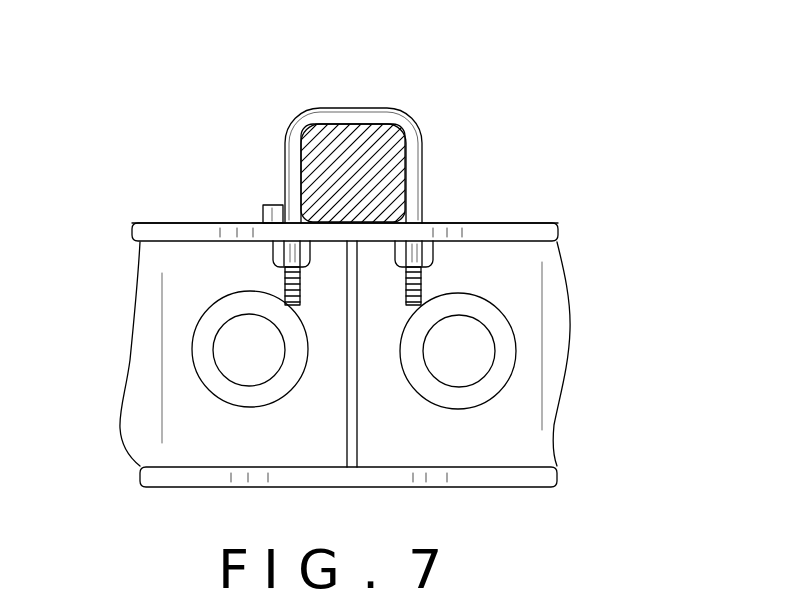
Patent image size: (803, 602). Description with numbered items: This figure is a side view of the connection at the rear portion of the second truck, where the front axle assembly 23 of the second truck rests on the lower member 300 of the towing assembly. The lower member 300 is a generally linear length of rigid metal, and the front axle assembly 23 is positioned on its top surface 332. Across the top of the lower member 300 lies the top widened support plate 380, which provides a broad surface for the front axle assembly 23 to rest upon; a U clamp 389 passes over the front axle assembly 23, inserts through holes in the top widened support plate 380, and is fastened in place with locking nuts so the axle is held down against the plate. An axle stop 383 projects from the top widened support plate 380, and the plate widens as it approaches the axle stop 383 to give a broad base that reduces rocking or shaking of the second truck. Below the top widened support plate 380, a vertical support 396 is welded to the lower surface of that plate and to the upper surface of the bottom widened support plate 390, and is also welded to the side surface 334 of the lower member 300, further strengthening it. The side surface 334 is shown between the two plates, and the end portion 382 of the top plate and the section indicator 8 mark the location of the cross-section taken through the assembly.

The front axle assembly 23 is at (342, 143).
The U clamp 389 is at (423, 138).
The top surface 332 is at (466, 221).
The top widened support plate 380 is at (523, 232).
The plate end portion 382 is at (190, 233).
The axle stop 383 is at (271, 212).
The side surface 334 is at (520, 273).
The lower member 300 is at (517, 394).
The bottom widened support plate 390 is at (545, 477).
The vertical supports 396 is at (357, 415).
The section line 8- 8 is at (199, 157).